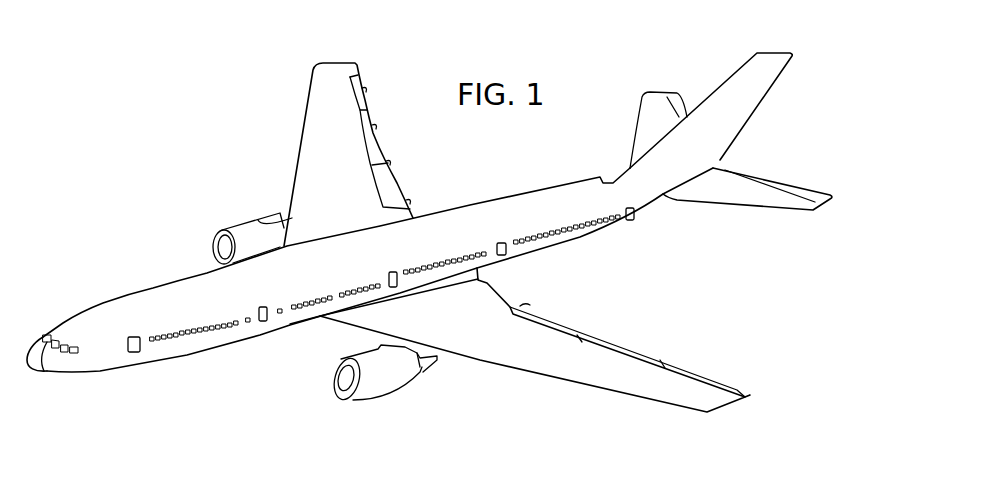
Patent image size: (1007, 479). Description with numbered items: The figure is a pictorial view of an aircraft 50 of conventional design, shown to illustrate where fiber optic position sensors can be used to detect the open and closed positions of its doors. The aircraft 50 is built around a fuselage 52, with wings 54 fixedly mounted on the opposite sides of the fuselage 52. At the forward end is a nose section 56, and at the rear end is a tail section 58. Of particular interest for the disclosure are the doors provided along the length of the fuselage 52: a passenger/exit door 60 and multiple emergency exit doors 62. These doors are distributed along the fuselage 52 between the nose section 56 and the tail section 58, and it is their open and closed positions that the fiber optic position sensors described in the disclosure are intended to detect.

The aircraft 50 is at (198, 243).
The fuselage 52 is at (457, 207).
The wings 54 is at (316, 119).
The nose section 56 is at (89, 377).
The tail section 58 is at (722, 83).
The passenger/exit door 60 is at (135, 353).
The emergency exit doors 62 is at (263, 321).